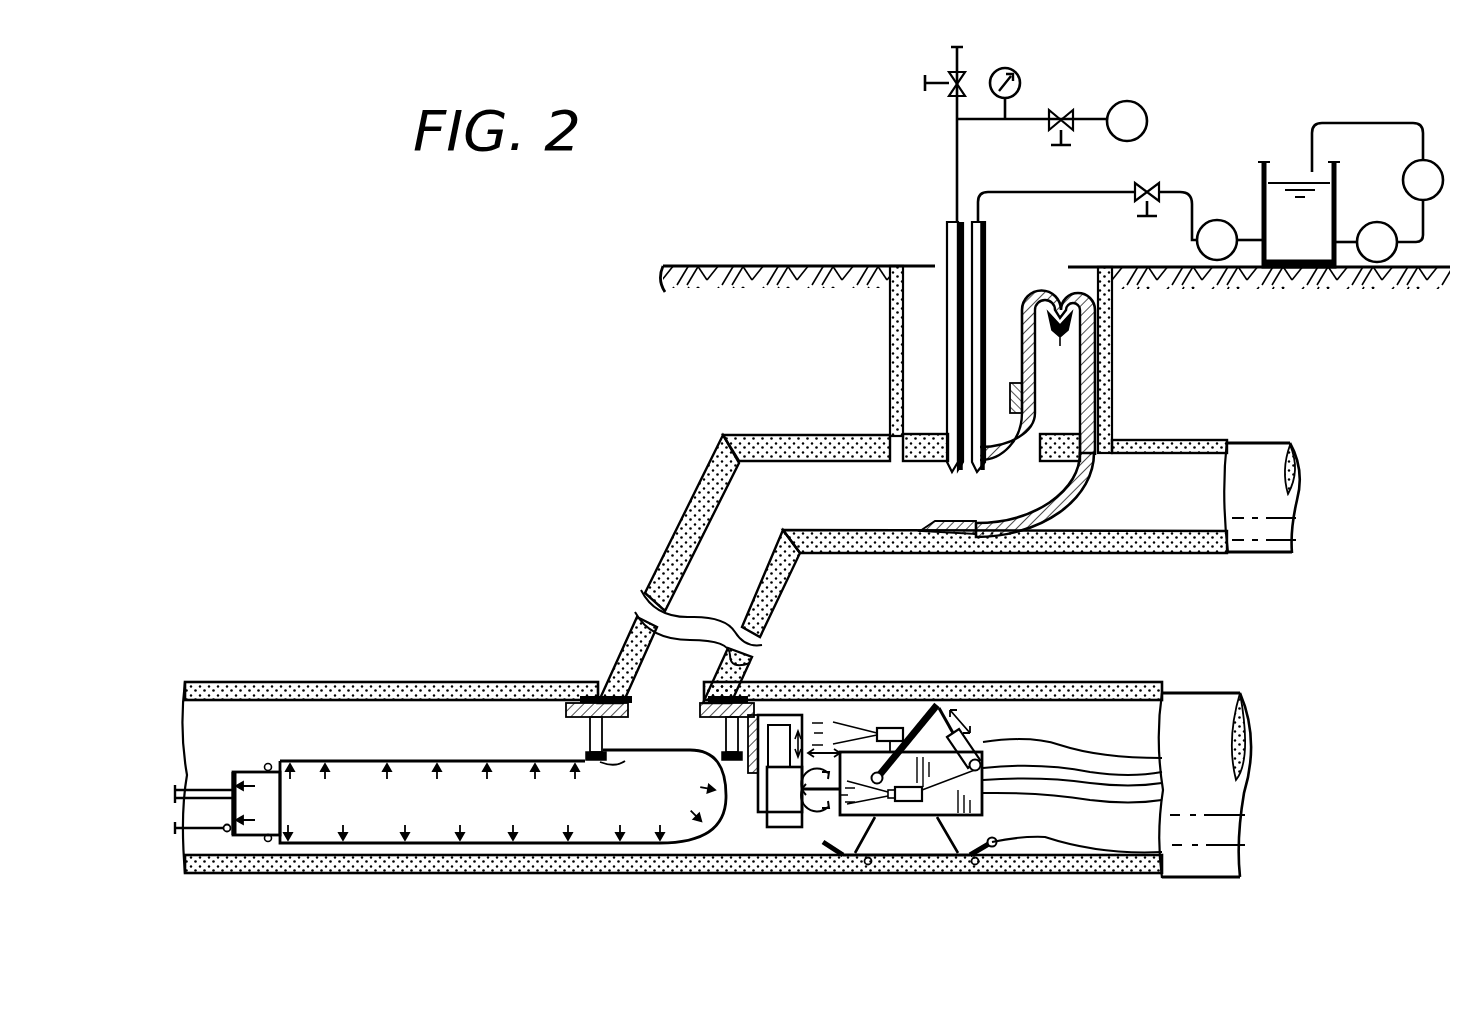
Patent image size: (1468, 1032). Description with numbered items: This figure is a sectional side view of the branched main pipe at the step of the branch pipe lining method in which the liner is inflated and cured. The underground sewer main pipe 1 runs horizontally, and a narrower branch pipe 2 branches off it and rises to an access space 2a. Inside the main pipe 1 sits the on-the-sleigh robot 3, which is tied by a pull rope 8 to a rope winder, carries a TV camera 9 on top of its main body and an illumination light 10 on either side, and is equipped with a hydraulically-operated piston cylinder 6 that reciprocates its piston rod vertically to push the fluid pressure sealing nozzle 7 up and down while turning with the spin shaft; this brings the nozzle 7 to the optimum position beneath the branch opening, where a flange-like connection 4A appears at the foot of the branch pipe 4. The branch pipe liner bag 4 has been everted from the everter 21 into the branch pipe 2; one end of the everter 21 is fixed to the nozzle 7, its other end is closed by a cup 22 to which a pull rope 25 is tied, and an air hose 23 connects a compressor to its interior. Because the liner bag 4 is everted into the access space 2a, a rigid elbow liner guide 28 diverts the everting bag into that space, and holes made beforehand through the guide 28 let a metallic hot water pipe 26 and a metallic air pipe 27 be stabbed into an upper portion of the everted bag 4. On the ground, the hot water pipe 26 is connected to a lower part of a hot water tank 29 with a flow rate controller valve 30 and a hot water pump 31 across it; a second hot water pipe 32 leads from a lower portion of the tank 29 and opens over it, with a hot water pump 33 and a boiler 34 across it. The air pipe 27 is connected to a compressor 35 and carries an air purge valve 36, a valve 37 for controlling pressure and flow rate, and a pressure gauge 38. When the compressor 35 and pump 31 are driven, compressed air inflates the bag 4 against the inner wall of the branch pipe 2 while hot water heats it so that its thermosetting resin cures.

The underground sewer main pipe 1 is at (1062, 692).
The branch pipe 2 is at (750, 665).
The access space 2a is at (1090, 283).
The on-the-sleigh robot 3 is at (970, 816).
The branch pipe liner bag 4 is at (678, 578).
The flange 4A is at (552, 700).
The hydraulically-operated piston cylinder 6 is at (780, 828).
The fluid pressure sealing nozzle 7 is at (570, 723).
The pull rope 8 is at (1045, 842).
The TV camera 9 is at (887, 728).
The illumination light 10 is at (907, 802).
The everter 21 is at (398, 759).
The cup 22 is at (252, 770).
The air hose 23 is at (188, 792).
The pull rope 25 is at (200, 830).
The metallic hot water pipe 26 is at (985, 247).
The metallic air pipe 27 is at (950, 244).
The rigid elbow liner guide 28 is at (1075, 495).
The hot water tank 29 is at (1268, 165).
The flow rate controller valve 30 is at (1152, 186).
The hot water pump 31 is at (1213, 220).
The hot water pipe 32 is at (1418, 242).
The hot water pump 33 is at (1372, 223).
The boiler 34 is at (1437, 169).
The compressor 35 is at (1147, 115).
The air purge valve 36 is at (950, 98).
The valve 37 is at (1068, 112).
The pressure gauge 38 is at (1020, 81).